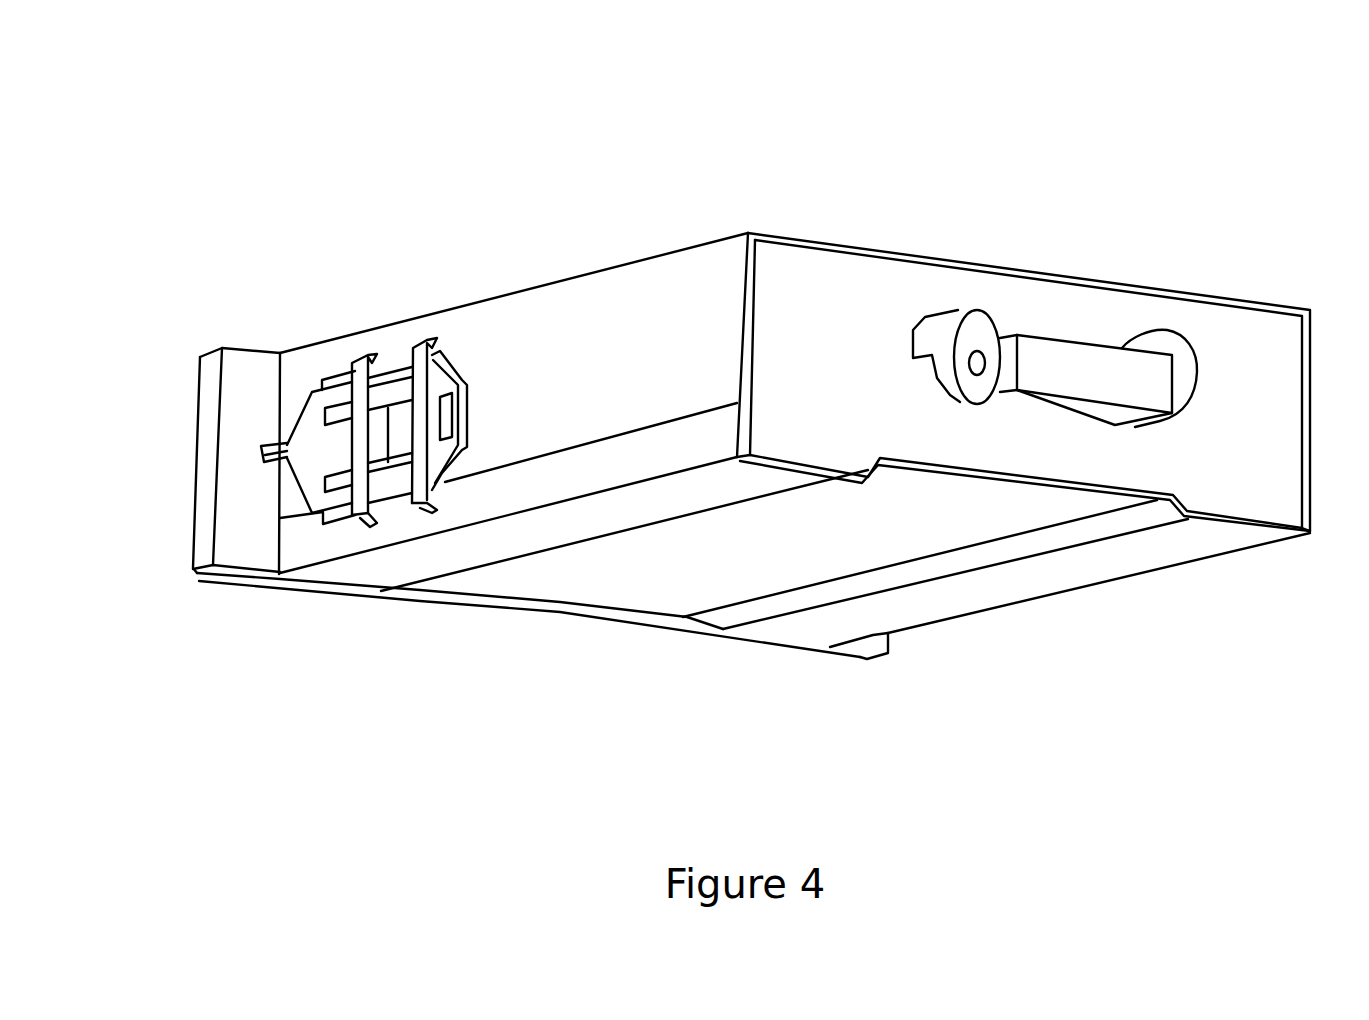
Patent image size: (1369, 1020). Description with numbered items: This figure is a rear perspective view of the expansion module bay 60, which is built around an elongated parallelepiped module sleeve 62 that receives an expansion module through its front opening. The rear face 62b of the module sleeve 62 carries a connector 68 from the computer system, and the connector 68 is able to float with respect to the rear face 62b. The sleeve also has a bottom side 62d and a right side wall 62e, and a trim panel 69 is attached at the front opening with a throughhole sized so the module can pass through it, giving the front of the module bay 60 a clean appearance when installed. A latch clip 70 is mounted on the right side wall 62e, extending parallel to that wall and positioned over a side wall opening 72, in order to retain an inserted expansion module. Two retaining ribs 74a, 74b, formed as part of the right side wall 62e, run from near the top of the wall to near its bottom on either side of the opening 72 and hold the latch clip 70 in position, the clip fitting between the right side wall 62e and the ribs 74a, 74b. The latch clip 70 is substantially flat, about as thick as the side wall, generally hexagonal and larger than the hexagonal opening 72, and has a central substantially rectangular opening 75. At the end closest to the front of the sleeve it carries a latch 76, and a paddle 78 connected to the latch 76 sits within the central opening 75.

The module bay 60 is at (1172, 178).
The module sleeve 62 is at (642, 257).
The rear face 62b is at (812, 280).
The bottom side 62d is at (727, 573).
The right side wall 62e is at (543, 302).
The connector 68 is at (1055, 350).
The trim panel 69 is at (200, 357).
The latch clip 70 is at (312, 410).
The side wall opening 72 is at (332, 518).
The retaining rib 74a is at (360, 493).
The retaining rib 74b is at (422, 505).
The central opening 75 is at (400, 402).
The latch 76 is at (263, 460).
The paddle 78 is at (392, 453).